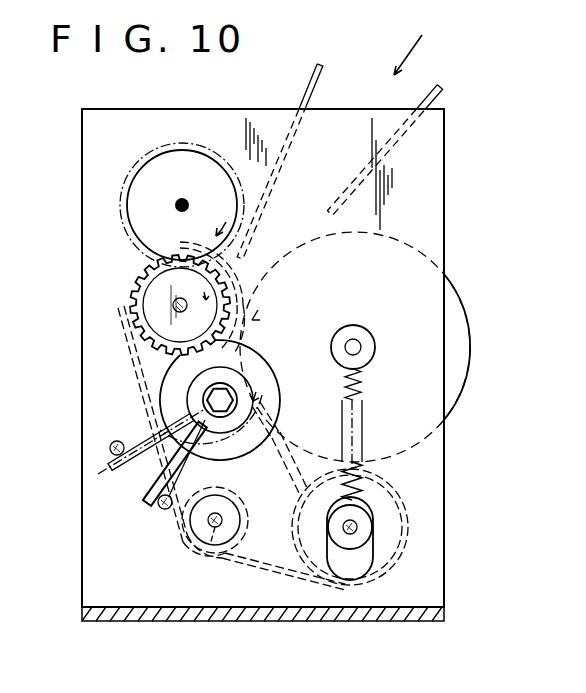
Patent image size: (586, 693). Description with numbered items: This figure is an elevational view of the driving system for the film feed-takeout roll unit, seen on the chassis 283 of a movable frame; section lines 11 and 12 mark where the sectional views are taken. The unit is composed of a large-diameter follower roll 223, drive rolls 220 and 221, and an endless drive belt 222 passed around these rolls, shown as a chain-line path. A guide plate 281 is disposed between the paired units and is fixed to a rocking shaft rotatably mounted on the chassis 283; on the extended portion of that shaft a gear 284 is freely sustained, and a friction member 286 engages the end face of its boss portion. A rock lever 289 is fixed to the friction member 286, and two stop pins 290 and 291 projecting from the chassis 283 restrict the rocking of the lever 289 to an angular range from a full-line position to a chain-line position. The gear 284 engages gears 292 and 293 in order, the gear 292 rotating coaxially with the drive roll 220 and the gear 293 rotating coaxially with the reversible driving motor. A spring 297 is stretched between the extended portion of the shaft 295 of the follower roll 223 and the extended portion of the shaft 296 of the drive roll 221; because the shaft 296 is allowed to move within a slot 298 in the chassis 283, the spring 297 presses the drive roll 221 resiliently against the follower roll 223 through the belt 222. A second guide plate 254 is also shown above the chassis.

The section line 11- 11 is at (348, 104).
The section line 12- 12 is at (223, 152).
The drive roll 220 is at (131, 330).
The drive roll 221 is at (397, 540).
The endless drive belt 222 is at (243, 563).
The large-diameter follower roll 223 is at (456, 320).
The guide plate 254 is at (447, 93).
The guide plate 281 is at (270, 438).
The chassis 283 is at (438, 174).
The gear 284 is at (176, 383).
The friction member 286 is at (192, 401).
The rock lever 289 is at (160, 496).
The stop pin 290 is at (160, 512).
The stop pin 291 is at (108, 451).
The gear 292 is at (152, 287).
The gear 293 is at (146, 184).
The shaft of the follower roll 295 is at (355, 338).
The shaft of the drive roll 296 is at (358, 527).
The spring 297 is at (371, 481).
The slot 298 is at (362, 558).